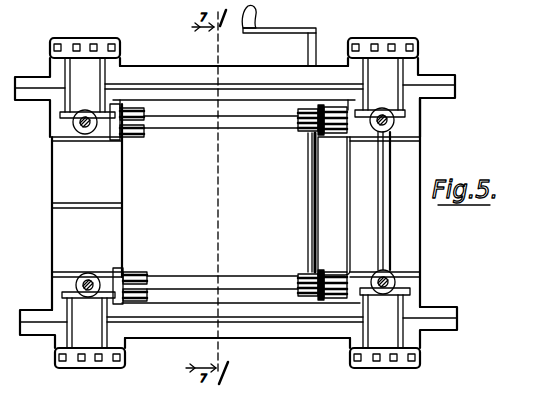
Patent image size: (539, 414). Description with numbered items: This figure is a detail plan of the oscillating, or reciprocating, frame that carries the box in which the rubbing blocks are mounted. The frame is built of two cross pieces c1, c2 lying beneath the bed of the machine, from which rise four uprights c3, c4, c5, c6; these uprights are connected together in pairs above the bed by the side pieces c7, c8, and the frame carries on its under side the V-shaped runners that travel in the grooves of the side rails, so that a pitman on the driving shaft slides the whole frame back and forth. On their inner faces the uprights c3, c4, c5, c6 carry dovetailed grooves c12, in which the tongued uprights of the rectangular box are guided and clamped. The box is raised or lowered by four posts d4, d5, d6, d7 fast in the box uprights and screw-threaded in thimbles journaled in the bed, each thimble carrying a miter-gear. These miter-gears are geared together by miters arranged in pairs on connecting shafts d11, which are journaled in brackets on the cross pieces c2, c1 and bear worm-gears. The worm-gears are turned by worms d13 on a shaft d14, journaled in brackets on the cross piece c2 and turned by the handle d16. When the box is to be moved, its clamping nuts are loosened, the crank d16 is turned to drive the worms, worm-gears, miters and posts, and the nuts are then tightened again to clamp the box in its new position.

The cross piece c1 is at (170, 348).
The cross piece c2 is at (405, 237).
The upright c3 is at (402, 76).
The upright c4 is at (412, 338).
The upright c5 is at (100, 345).
The upright c6 is at (108, 75).
The side piece c7 is at (178, 70).
The side piece c8 is at (300, 340).
The dovetailed groove c12 is at (406, 116).
The post d4 is at (88, 134).
The post d5 is at (386, 134).
The post d6 is at (390, 273).
The post d7 is at (90, 276).
The connecting shaft d11 is at (178, 129).
The worm d13 is at (300, 132).
The shaft d14 is at (307, 207).
The handle d16 is at (300, 33).